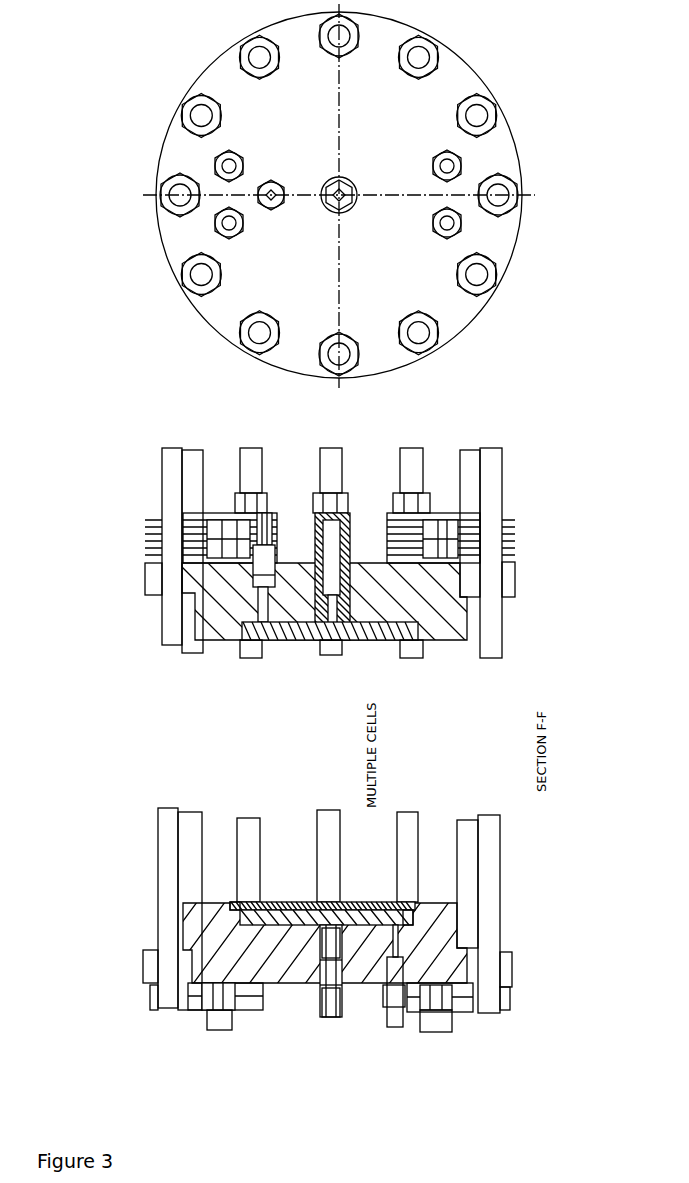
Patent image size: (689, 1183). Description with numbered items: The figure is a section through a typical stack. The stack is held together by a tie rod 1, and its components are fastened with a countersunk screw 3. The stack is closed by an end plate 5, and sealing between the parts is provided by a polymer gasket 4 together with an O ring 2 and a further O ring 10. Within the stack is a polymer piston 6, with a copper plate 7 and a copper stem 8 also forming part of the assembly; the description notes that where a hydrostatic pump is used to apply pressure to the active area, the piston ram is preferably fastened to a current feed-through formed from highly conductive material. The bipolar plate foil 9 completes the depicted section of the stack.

The tie rod 1 is at (160, 630).
The O ring 2 is at (424, 914).
The countersunk screw 3 is at (325, 905).
The polymer gasket 4 is at (183, 905).
The end plate 5 is at (142, 964).
The polymer piston 6 is at (240, 910).
The copper plate 7 is at (250, 902).
The copper stem 8 is at (313, 962).
The bipolar plate foil 9 is at (317, 923).
The O ring 10 is at (343, 942).